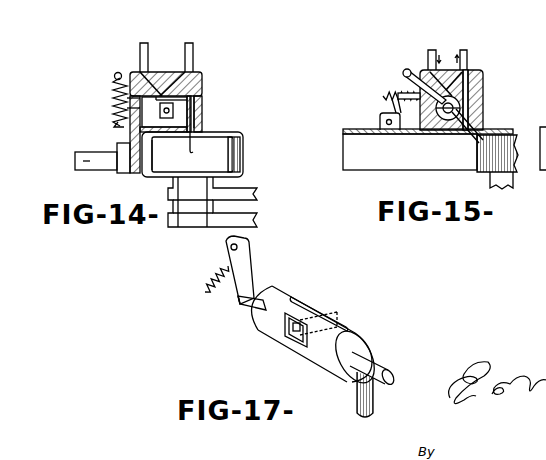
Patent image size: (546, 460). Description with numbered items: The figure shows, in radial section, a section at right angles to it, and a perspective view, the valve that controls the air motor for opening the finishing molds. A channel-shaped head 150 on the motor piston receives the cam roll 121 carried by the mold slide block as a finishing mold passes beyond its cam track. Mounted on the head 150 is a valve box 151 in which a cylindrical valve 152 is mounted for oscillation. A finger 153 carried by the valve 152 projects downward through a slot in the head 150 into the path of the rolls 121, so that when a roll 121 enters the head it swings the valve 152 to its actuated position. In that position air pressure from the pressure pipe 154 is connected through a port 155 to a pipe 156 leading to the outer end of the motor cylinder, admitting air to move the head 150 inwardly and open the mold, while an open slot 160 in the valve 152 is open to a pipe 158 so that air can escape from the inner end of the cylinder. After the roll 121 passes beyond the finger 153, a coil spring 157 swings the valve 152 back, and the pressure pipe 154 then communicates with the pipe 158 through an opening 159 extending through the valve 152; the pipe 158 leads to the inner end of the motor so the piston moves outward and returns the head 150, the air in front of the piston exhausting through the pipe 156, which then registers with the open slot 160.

In FIG. 14, the cam roll 121 is at (222, 160).
In FIG. 15, the cam roll 121 is at (489, 162).
In FIG. 14, the head 150 is at (222, 132).
In FIG. 15, the head 150 is at (395, 168).
In FIG. 14, the valve box 151 is at (203, 86).
In FIG. 15, the valve box 151 is at (484, 88).
In FIG. 14, the cylindrical valve 152 is at (178, 111).
In FIG. 15, the cylindrical valve 152 is at (484, 112).
In FIG. 17, the cylindrical valve 152 is at (286, 290).
In FIG. 14, the finger 153 is at (191, 153).
In FIG. 15, the finger 153 is at (471, 140).
In FIG. 17, the finger 153 is at (372, 402).
In FIG. 15, the pipe 154 is at (403, 78).
In FIG. 17, the port 155 is at (288, 329).
In FIG. 14, the pipe 156 is at (140, 50).
In FIG. 15, the pipe 156 is at (432, 50).
In FIG. 14, the coil spring 157 is at (113, 106).
In FIG. 15, the coil spring 157 is at (385, 101).
In FIG. 17, the coil spring 157 is at (215, 273).
In FIG. 14, the pipe 158 is at (193, 50).
In FIG. 15, the pipe 158 is at (468, 58).
In FIG. 17, the opening 159 is at (325, 305).
In FIG. 17, the open slot 160 is at (350, 327).